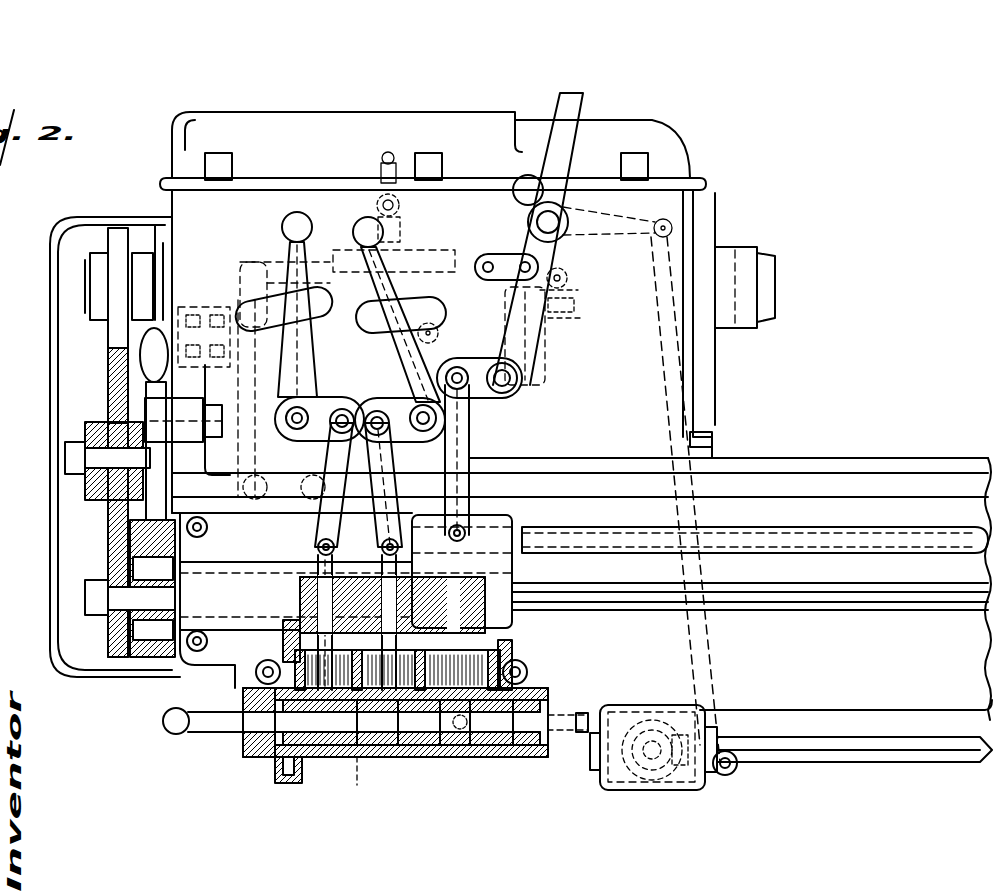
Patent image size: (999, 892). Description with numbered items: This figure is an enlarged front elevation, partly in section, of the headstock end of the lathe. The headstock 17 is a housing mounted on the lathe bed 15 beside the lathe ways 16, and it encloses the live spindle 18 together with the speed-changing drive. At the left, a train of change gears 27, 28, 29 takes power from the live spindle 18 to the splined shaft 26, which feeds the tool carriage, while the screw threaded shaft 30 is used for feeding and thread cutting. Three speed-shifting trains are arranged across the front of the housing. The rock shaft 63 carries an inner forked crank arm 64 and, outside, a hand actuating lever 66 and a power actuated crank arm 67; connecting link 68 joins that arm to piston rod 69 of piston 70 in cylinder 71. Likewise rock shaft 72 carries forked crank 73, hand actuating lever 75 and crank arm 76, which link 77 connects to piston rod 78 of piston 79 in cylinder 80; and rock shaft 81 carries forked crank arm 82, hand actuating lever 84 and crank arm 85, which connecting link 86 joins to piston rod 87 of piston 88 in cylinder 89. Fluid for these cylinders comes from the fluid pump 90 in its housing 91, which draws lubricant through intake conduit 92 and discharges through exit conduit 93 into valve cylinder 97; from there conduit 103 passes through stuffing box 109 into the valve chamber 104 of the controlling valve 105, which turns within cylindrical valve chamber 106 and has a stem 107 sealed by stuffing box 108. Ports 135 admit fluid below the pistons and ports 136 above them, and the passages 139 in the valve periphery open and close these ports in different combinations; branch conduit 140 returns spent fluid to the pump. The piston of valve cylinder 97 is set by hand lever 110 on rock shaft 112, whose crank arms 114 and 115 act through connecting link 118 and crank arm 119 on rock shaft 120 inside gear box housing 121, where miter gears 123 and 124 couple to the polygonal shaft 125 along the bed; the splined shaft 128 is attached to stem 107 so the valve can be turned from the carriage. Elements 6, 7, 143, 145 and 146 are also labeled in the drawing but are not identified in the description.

The valve block 6 is at (397, 695).
The bracket 7 is at (510, 566).
The lathe bed 15 is at (806, 692).
The lathe ways 16 is at (796, 460).
The headstock 17 is at (185, 203).
The live spindle 18 is at (92, 290).
The splined shaft 26 is at (793, 610).
The change gear 27 is at (108, 329).
The change gear 28 is at (108, 400).
The change gear 29 is at (106, 566).
The screw threaded shaft 30 is at (773, 526).
The rock shaft 63 is at (292, 416).
The forked crank arm 64 is at (316, 333).
The hand actuating lever 66 is at (283, 235).
The power actuated crank arm 67 is at (330, 400).
The connecting link 68 is at (320, 441).
The piston rod 69 is at (318, 551).
The piston 70 is at (283, 643).
The cylinder 71 is at (256, 672).
The rock shaft 72 is at (430, 418).
The forked crank 73 is at (440, 333).
The hand actuating lever 75 is at (363, 233).
The power actuated crank arm 76 is at (387, 407).
The link 77 is at (392, 462).
The piston rod 78 is at (384, 553).
The piston 79 is at (410, 762).
The cylinder 80 is at (435, 758).
The rock shaft 81 is at (518, 380).
The forked crank arm 82 is at (548, 328).
The hand actuating lever 84 is at (525, 350).
The power actuated crank arm 85 is at (490, 405).
The connecting link 86 is at (470, 447).
The piston rod 87 is at (466, 547).
The piston 88 is at (512, 650).
The cylinder 89 is at (528, 670).
The fluid pump 90 is at (228, 308).
The pump housing 91 is at (240, 360).
The intake conduit 92 is at (243, 422).
The exit conduit 93 is at (278, 263).
The valve cylinder 97 is at (350, 248).
The conduit 103 is at (398, 206).
The valve chamber 104 is at (447, 783).
The controlling valve 105 is at (397, 753).
The cylindrical valve chamber 106 is at (333, 765).
The valve stem 107 is at (562, 740).
The stuffing box 108 is at (522, 762).
The stuffing box 109 is at (300, 781).
The hand lever 110 is at (590, 103).
The rock shaft 112 is at (565, 240).
The crank arm 114 is at (568, 270).
The crank arm 115 is at (626, 214).
The connecting link 118 is at (696, 413).
The crank arm 119 is at (727, 776).
The rock shaft 120 is at (652, 757).
The gear box housing 121 is at (616, 794).
The miter gear 123 is at (630, 765).
The miter gear 124 is at (672, 775).
The polygonal shaft 125 is at (806, 765).
The splined shaft 128 is at (580, 715).
The ports 135 is at (472, 757).
The ports 136 is at (520, 662).
The passages 139 is at (316, 762).
The branch conduit 140 is at (304, 521).
The spring 143 is at (578, 302).
The pin 145 is at (585, 312).
The pin 146 is at (576, 288).